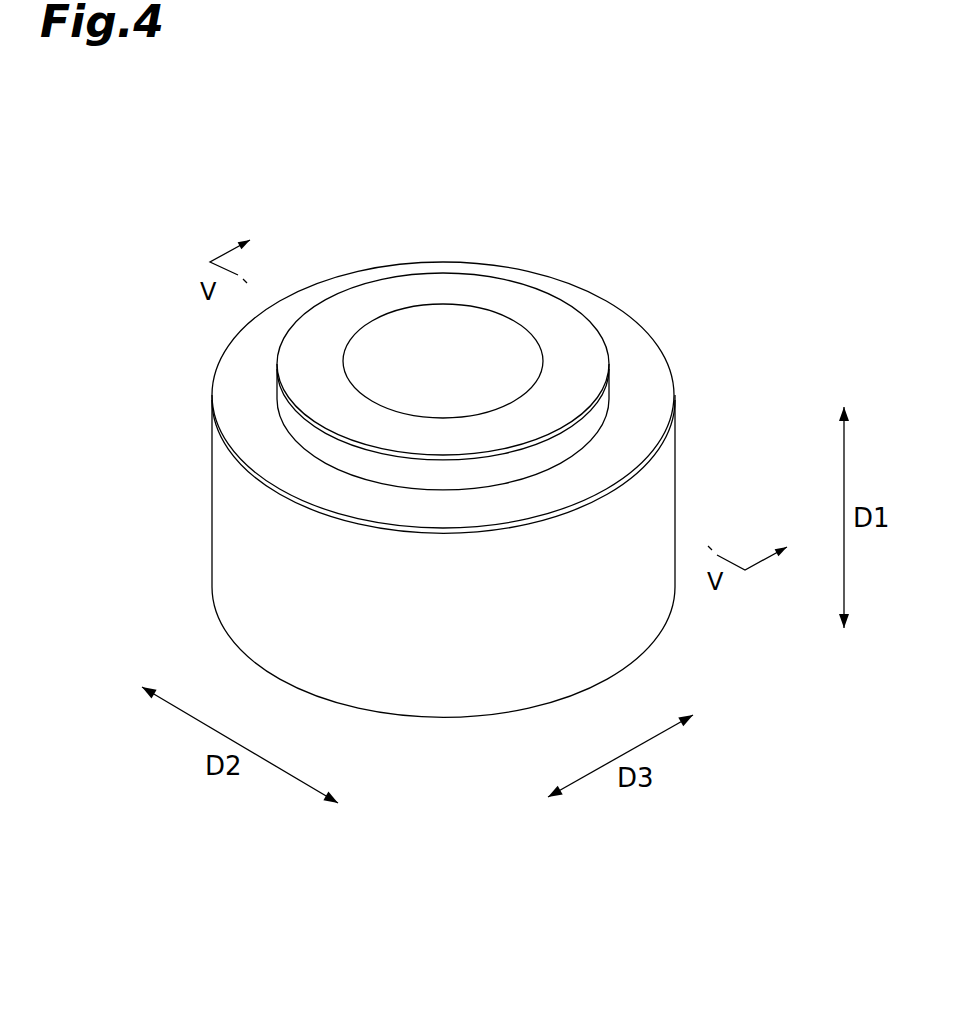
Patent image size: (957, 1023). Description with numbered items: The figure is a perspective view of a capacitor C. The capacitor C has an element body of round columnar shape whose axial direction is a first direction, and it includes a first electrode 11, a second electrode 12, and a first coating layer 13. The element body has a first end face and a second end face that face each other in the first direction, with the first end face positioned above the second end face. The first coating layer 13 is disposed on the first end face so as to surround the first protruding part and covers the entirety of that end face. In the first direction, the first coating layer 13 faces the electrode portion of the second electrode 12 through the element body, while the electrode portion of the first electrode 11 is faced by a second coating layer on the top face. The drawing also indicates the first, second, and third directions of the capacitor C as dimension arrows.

The first electrode 11 is at (552, 315).
The second electrode 12 is at (228, 530).
The first coating layer 13 is at (642, 368).
The capacitor C is at (672, 207).